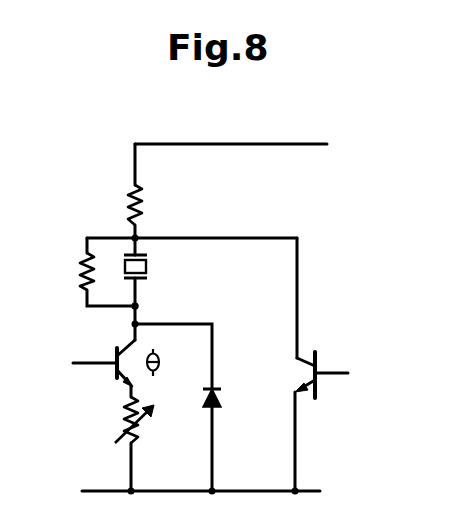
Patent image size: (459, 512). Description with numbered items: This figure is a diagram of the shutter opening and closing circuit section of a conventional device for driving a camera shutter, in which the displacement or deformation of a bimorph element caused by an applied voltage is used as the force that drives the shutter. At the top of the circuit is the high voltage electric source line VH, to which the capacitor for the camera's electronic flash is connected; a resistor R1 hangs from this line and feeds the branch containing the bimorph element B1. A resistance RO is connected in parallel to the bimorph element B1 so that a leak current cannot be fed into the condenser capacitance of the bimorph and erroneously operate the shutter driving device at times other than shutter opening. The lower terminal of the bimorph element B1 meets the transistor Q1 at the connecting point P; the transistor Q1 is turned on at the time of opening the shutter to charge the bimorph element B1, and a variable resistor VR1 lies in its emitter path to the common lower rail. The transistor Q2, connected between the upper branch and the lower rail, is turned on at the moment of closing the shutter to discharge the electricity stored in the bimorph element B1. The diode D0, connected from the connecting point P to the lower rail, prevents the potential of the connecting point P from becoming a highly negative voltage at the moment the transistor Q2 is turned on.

The high voltage electric source line VH is at (347, 151).
The resistor R1 is at (116, 205).
The resistance RO is at (67, 271).
The bimorph element B1 is at (155, 269).
The connecting point P is at (146, 303).
The transistor Q1 is at (116, 360).
The transistor Q2 is at (305, 375).
The diode D0 is at (233, 400).
The variable resistor VR1 is at (152, 422).